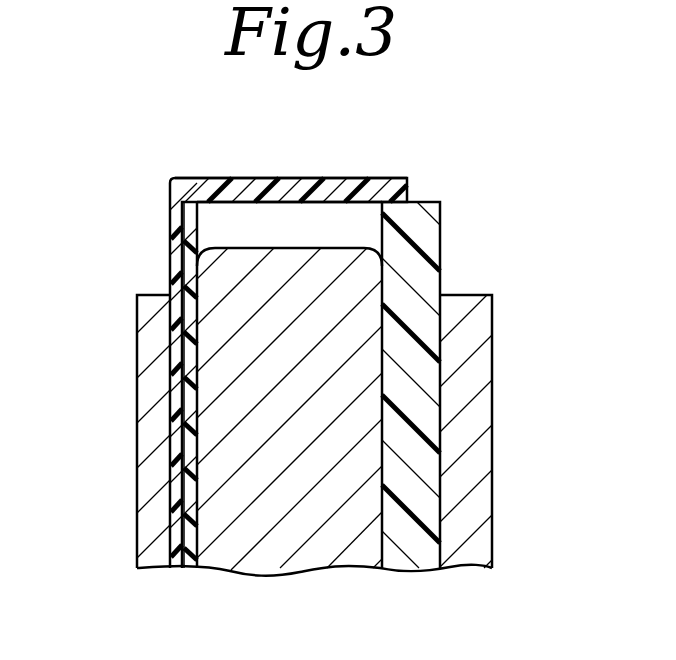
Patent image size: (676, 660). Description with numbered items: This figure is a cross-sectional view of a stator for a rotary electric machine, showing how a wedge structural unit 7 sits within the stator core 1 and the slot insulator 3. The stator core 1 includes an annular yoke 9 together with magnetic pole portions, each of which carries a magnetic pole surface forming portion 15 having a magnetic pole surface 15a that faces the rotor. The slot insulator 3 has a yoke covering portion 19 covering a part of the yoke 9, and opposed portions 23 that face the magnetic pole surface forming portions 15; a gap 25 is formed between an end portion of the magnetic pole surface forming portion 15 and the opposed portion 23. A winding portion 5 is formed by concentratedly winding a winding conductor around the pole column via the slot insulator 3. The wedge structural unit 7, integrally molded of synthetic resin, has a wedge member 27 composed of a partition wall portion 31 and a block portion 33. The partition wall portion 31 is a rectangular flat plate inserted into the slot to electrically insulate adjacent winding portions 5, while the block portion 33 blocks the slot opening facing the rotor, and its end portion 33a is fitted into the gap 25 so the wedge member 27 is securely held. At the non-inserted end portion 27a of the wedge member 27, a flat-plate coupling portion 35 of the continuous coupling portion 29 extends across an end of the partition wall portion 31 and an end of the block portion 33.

The stator core 1 is at (129, 397).
The slot insulator 3 is at (417, 240).
The winding portion 5 is at (315, 553).
The wedge structural unit 7 is at (162, 207).
The yoke 9 is at (478, 369).
The magnetic pole surface forming portion 15 is at (144, 432).
The magnetic pole surface 15a is at (133, 472).
The yoke covering portion 19 is at (423, 263).
The opposed portion 23 is at (172, 326).
The gap 25 is at (172, 356).
The wedge member 27 is at (328, 238).
The non-inserted end portion 27a is at (322, 218).
The continuous coupling portion 29 is at (312, 174).
The partition wall portion 31 is at (372, 220).
The block portion 33 is at (172, 272).
The end portion of the block portion 33a is at (180, 498).
The coupling portion 35 is at (260, 176).